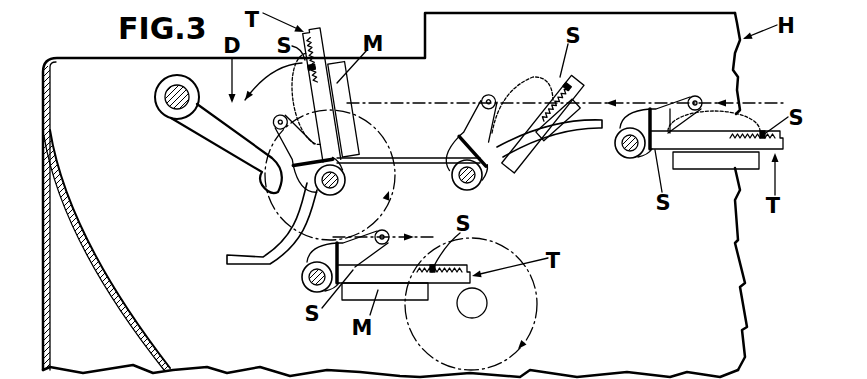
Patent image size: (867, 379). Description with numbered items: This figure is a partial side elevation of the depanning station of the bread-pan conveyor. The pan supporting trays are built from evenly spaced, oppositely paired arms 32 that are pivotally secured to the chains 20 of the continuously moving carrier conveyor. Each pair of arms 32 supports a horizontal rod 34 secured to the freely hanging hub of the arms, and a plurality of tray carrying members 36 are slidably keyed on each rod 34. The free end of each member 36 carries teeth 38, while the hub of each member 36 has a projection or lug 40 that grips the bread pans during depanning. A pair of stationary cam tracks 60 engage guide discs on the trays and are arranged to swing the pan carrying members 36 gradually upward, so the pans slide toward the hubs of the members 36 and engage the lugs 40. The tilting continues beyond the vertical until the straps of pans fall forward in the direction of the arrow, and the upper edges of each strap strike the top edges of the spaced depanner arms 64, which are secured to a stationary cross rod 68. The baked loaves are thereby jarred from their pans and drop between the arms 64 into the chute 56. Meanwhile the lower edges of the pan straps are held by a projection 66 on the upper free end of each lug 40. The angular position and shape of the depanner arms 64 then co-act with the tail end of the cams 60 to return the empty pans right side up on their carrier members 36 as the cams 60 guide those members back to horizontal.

The chains 20 is at (585, 97).
The arms 32 is at (273, 124).
The horizontal rod 34 is at (340, 191).
The tray carrying member 36 is at (323, 107).
The teeth 38 is at (317, 43).
The lug 40 is at (303, 178).
The chute 56 is at (110, 277).
The cam track 60 is at (264, 264).
The depanner arm 64 is at (210, 116).
The projection 66 is at (268, 150).
The cross rod 68 is at (155, 93).